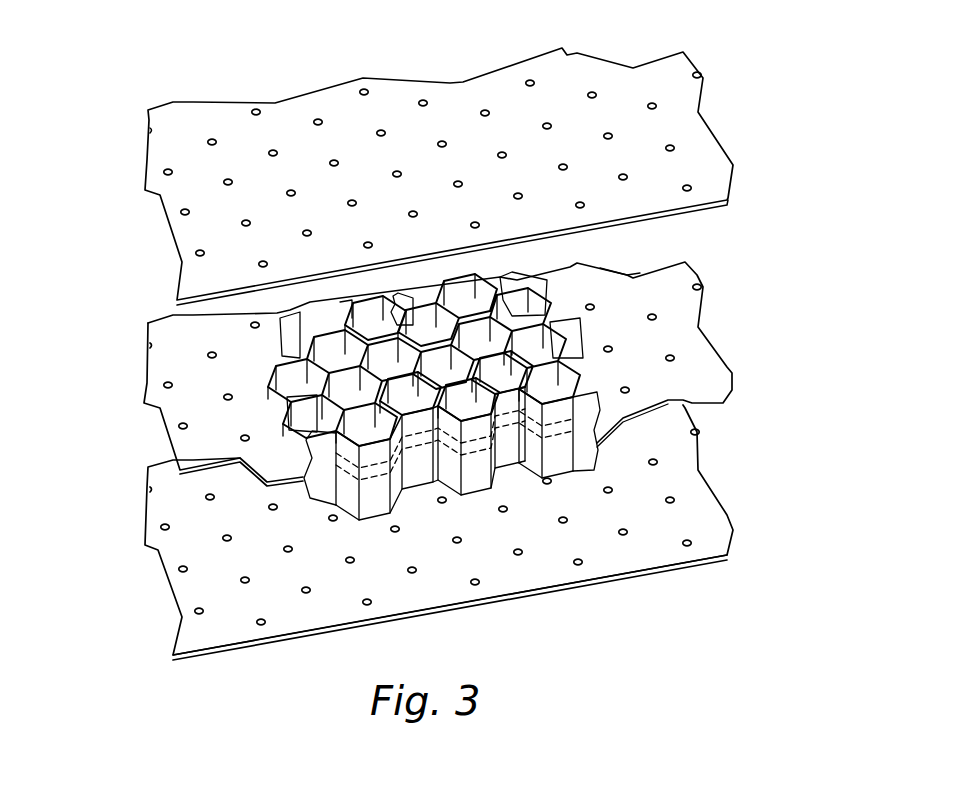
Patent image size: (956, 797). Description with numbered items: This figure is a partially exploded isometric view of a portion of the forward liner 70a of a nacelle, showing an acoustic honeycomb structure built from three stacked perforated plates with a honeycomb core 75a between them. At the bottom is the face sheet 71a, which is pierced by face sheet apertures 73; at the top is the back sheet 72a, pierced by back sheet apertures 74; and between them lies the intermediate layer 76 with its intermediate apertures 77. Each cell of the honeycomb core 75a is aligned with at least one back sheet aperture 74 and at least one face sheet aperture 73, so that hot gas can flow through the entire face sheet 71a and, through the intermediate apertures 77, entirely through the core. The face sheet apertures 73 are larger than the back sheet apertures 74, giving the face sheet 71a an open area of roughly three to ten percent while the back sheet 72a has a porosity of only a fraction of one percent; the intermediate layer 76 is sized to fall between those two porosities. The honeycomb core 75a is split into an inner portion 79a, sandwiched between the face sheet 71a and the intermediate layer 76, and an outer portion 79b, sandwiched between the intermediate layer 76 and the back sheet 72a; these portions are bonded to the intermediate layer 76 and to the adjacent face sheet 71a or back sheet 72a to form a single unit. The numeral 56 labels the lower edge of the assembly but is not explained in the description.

The forward liner 70a is at (436, 360).
The back sheet 72a is at (471, 156).
The back sheet apertures 74 is at (363, 91).
The intermediate layer 76 is at (476, 358).
The intermediate apertures 77 is at (653, 316).
The honeycomb core 75a is at (626, 275).
The face sheet 71a is at (493, 559).
The face sheet apertures 73 is at (670, 499).
The panel edge 56 is at (272, 652).
The inner portion 79a is at (310, 491).
The outer portion 79b is at (303, 447).